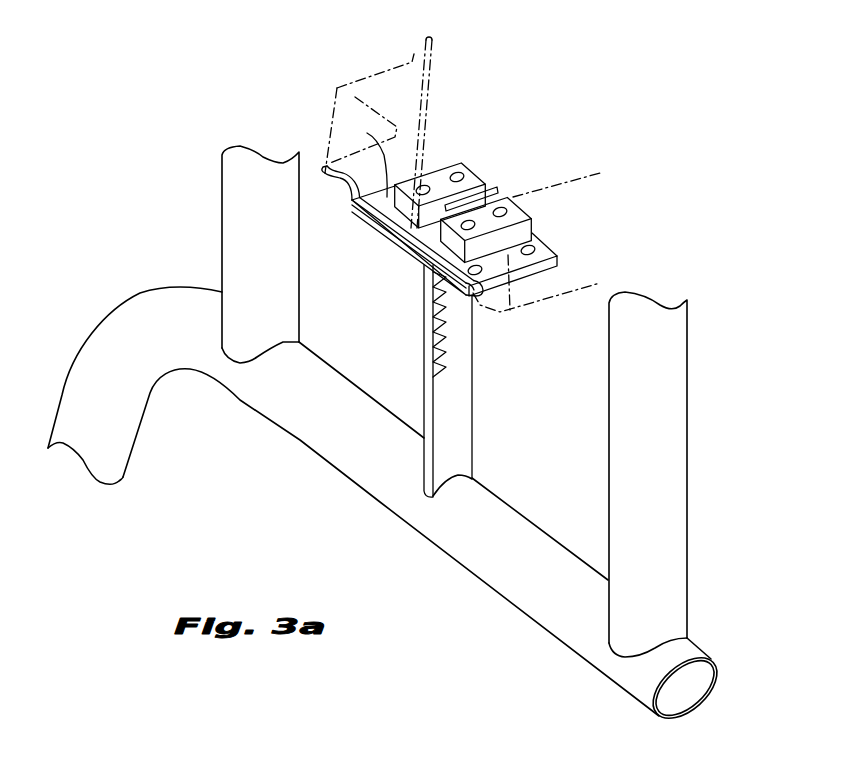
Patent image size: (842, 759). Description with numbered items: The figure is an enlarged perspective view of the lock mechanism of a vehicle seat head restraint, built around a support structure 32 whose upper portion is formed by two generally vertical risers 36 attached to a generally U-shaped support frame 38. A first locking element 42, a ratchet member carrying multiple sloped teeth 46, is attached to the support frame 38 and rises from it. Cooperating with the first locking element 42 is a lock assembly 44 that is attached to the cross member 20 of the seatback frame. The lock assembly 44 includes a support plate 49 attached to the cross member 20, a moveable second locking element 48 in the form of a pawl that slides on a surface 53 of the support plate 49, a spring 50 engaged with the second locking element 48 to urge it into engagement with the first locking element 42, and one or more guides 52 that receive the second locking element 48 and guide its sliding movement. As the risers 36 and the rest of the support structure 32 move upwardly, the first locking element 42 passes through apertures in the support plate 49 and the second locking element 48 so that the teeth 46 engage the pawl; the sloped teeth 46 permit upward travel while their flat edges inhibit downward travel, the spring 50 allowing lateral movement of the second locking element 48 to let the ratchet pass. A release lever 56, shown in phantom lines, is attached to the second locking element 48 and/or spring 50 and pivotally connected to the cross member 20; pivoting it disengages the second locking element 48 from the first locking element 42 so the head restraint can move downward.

The cross member 20 is at (378, 72).
The support structure 32 is at (100, 282).
The risers 36 is at (237, 182).
The support frame 38 is at (520, 509).
The first locking element 42 is at (472, 347).
The lock assembly 44 is at (395, 262).
The teeth 46 is at (423, 300).
The second locking element 48 is at (387, 237).
The support plate 49 is at (527, 275).
The spring 50 is at (350, 193).
The guides 52 is at (473, 164).
The surface 53 is at (363, 158).
The release lever 56 is at (432, 100).